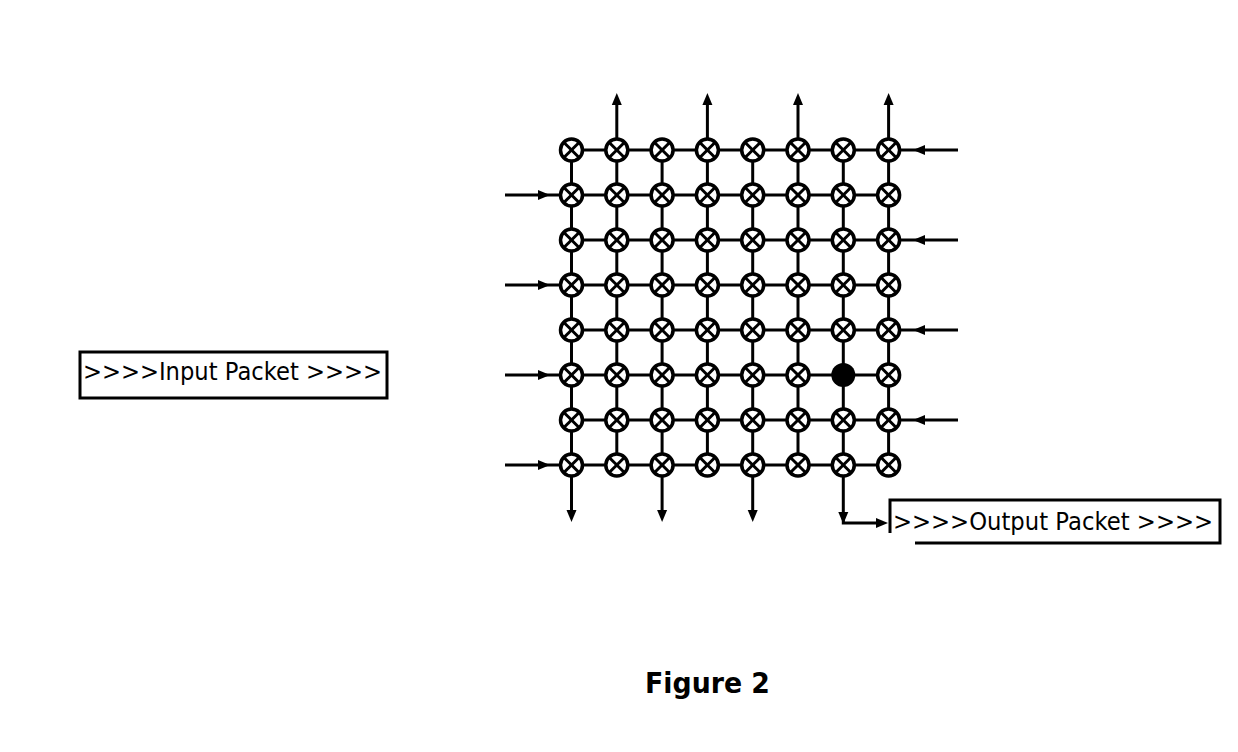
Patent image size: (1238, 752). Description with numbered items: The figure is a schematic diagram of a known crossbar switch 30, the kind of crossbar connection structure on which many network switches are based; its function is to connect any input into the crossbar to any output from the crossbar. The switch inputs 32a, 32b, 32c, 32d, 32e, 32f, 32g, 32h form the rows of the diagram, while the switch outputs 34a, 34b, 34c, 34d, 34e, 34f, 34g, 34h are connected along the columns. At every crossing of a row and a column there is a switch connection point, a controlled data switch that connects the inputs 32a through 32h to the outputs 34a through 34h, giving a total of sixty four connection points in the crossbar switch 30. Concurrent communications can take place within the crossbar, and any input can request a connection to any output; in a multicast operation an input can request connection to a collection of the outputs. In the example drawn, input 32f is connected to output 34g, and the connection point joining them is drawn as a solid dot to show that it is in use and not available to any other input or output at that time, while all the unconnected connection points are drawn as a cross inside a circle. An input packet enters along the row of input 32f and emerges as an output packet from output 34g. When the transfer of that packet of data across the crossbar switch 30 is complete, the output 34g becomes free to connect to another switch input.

The crossbar switch 30 is at (362, 57).
The input 32a is at (790, 150).
The input 32b is at (658, 202).
The input 32c is at (794, 239).
The input 32d is at (658, 284).
The input 32e is at (795, 327).
The input 32f is at (663, 374).
The input 32g is at (795, 419).
The input 32h is at (658, 464).
The output 34a is at (566, 355).
The output 34b is at (614, 261).
The output 34c is at (660, 355).
The output 34d is at (704, 260).
The output 34e is at (756, 355).
The output 34f is at (799, 260).
The output 34g is at (861, 355).
The output 34h is at (903, 252).